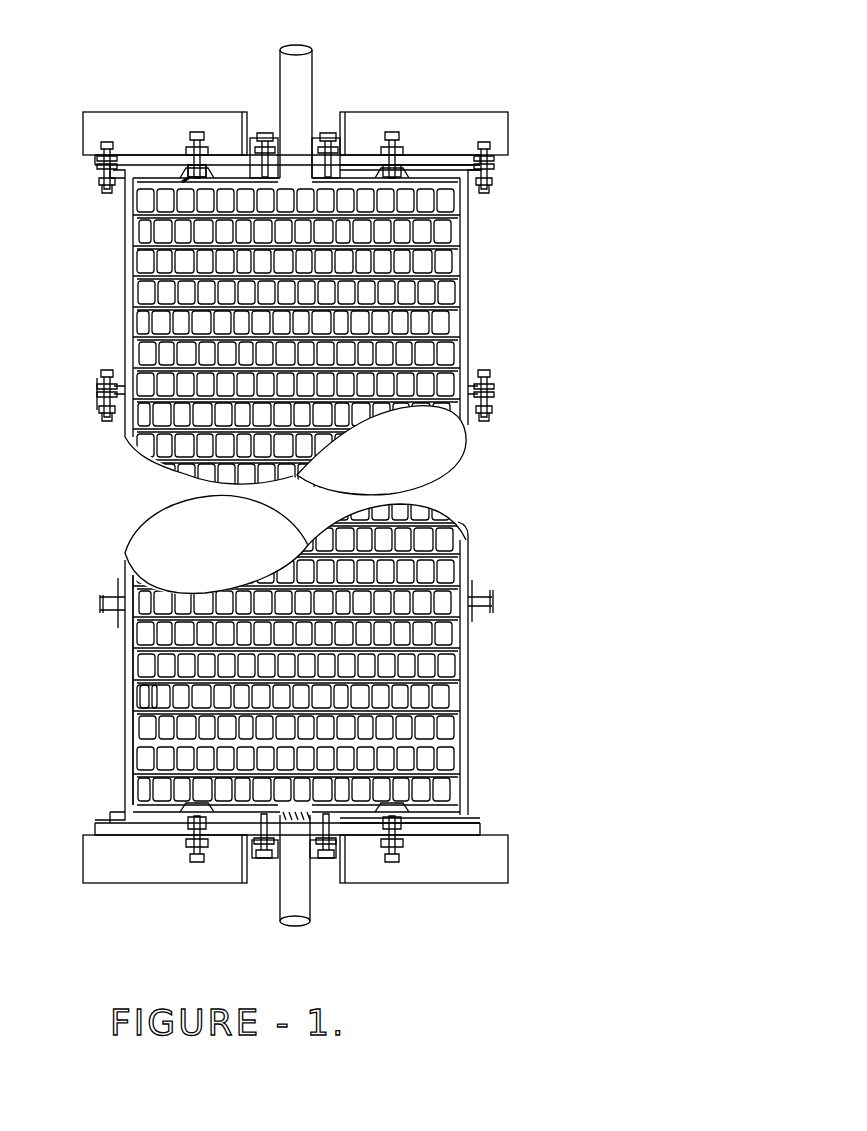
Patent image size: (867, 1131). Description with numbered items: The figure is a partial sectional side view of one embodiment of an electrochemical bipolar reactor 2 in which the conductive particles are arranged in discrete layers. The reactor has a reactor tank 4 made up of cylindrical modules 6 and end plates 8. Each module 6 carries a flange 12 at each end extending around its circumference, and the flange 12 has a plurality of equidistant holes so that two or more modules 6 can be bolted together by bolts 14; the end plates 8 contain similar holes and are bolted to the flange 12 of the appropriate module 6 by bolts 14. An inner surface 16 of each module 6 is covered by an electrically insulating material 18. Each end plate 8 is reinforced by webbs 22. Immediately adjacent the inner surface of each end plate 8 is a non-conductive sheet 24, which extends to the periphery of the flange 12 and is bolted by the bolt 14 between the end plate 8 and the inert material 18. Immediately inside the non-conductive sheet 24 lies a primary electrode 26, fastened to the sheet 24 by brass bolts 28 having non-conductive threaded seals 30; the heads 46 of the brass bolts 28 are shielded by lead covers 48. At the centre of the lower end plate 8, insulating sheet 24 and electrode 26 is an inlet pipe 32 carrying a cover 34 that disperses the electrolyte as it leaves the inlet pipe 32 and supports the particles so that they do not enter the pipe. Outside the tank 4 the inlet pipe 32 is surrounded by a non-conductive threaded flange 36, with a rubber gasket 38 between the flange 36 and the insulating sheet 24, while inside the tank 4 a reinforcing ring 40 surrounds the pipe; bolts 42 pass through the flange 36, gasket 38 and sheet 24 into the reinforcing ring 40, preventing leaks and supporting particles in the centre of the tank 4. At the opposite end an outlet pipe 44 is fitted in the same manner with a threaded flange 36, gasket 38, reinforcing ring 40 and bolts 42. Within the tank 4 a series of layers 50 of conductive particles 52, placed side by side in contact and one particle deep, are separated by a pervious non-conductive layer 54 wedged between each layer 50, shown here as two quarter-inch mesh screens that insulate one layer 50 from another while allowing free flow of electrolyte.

The electrochemical bipolar reactor 2 is at (508, 452).
The reactor tank 4 is at (470, 280).
The cylindrical module 6 is at (123, 328).
The end plate 8 is at (130, 153).
The flange 12 is at (495, 170).
The bolt 14 is at (100, 142).
The inner surface 16 is at (128, 686).
The electrically insulating material 18 is at (466, 708).
The webb 22 is at (467, 112).
The non-conductive sheet 24 is at (162, 160).
The primary electrode 26 is at (362, 165).
The brass bolt 28 is at (197, 138).
The non-conductive threaded seal 30 is at (396, 140).
The inlet pipe 32 is at (278, 915).
The cover 34 is at (294, 928).
The non-conductive threaded flange 36 is at (270, 858).
The rubber gasket 38 is at (318, 858).
The reinforcing ring 40 is at (273, 138).
The bolt 42 is at (327, 135).
The outlet pipe 44 is at (300, 48).
The head 46 is at (192, 177).
The lead cover 48 is at (200, 180).
The layer of conductive particles 50 is at (160, 758).
The conductive particle 52 is at (145, 702).
The non-conductive layer 54 is at (143, 779).